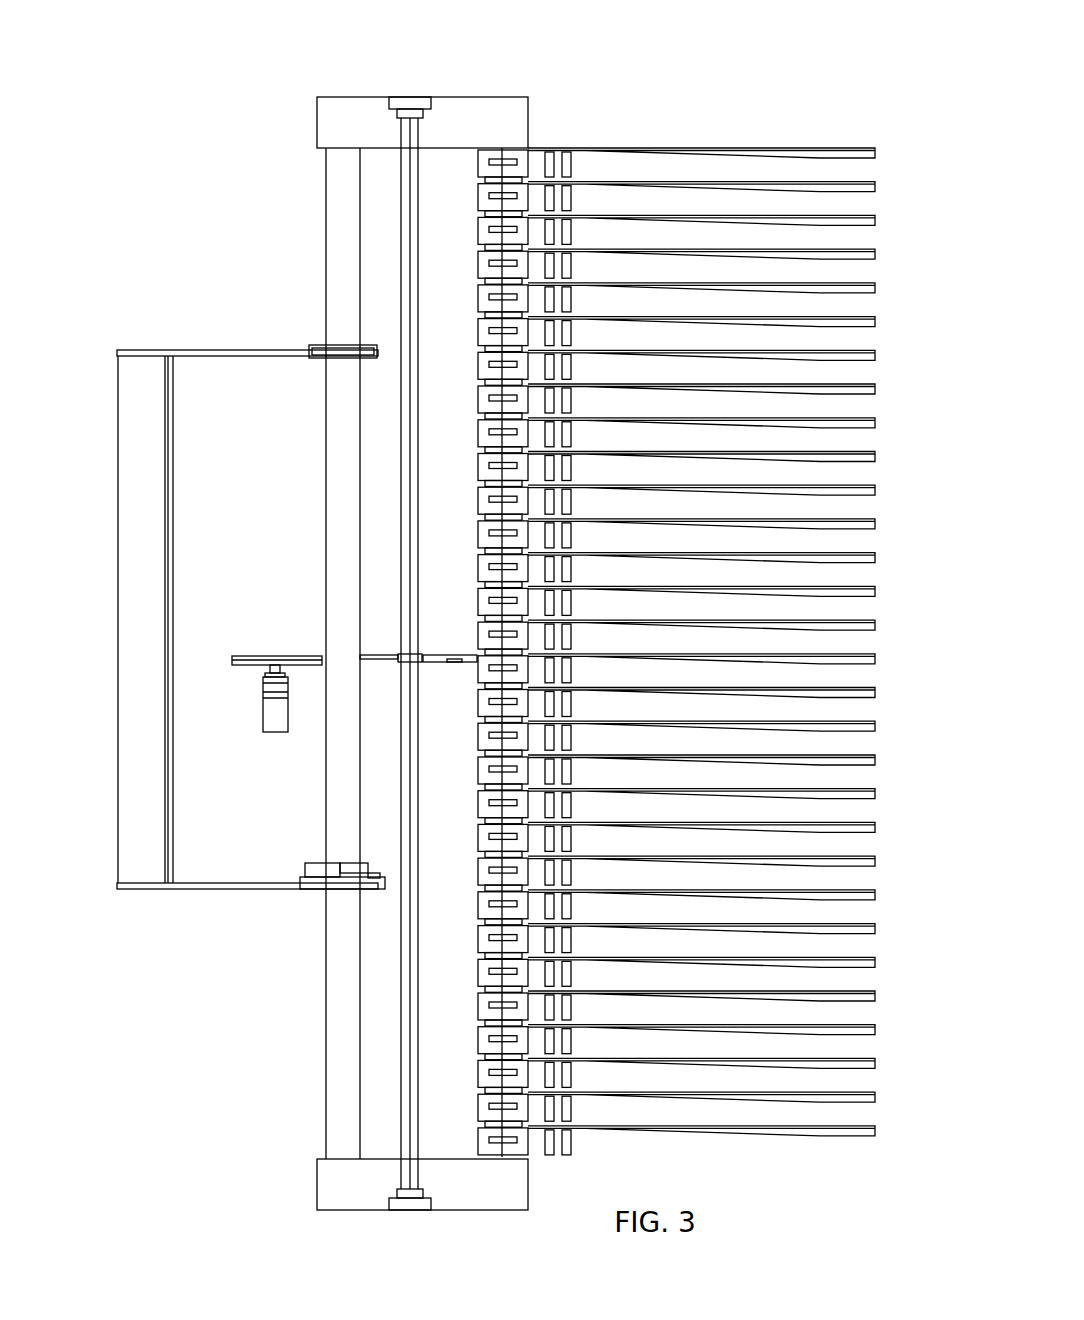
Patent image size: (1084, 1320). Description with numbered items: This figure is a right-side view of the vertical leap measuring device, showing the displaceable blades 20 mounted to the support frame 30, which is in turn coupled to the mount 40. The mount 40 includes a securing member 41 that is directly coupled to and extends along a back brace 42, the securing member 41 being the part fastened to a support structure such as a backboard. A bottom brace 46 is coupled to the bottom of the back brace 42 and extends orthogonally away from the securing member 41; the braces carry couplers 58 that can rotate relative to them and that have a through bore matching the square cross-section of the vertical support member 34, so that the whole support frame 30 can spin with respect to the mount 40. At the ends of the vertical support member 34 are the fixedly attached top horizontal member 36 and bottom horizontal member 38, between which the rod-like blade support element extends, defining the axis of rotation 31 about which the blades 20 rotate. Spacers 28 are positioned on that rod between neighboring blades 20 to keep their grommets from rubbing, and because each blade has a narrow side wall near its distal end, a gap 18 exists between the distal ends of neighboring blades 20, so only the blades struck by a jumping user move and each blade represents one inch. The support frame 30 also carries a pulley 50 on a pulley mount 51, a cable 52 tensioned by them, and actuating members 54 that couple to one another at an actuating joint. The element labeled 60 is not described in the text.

The gap 18 is at (862, 1011).
The blades 20 is at (755, 100).
The spacer 28 is at (480, 348).
The support frame 30 is at (300, 88).
The axis of rotation 31 is at (503, 150).
The vertical support member 34 is at (344, 207).
The top horizontal member 36 is at (475, 118).
The bottom horizontal member 38 is at (345, 1183).
The mount 40 is at (141, 330).
The securing member 41 is at (135, 538).
The back brace 42 is at (170, 483).
The bottom brace 46 is at (212, 886).
The pulley 50 is at (278, 656).
The pulley mount 51 is at (268, 730).
The cable 52 is at (388, 655).
The actuating members 54 is at (436, 655).
The coupler 58 is at (330, 347).
The drive shaft 60 is at (405, 1063).